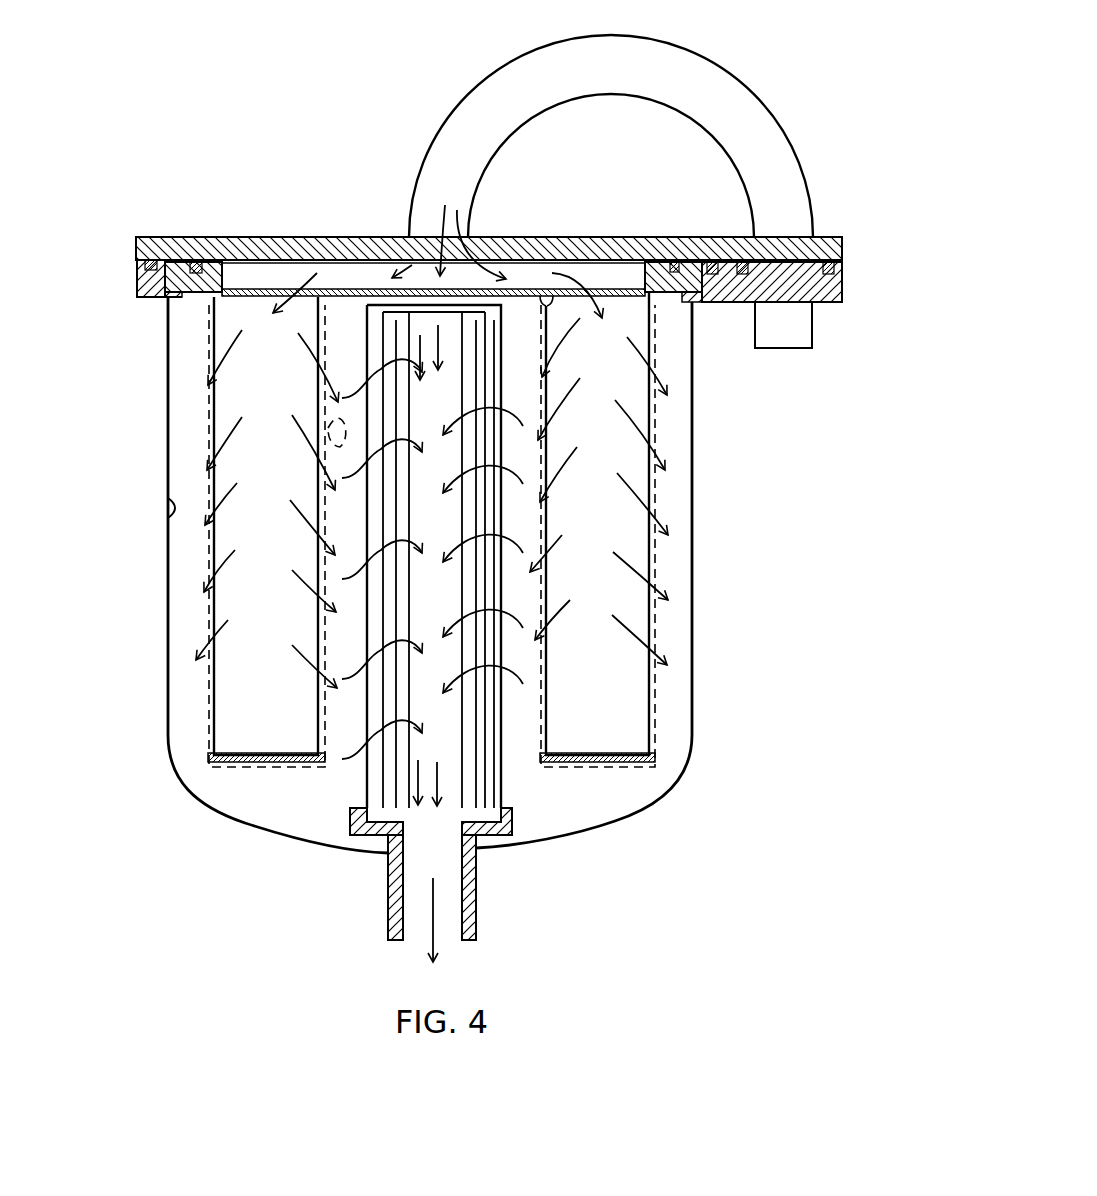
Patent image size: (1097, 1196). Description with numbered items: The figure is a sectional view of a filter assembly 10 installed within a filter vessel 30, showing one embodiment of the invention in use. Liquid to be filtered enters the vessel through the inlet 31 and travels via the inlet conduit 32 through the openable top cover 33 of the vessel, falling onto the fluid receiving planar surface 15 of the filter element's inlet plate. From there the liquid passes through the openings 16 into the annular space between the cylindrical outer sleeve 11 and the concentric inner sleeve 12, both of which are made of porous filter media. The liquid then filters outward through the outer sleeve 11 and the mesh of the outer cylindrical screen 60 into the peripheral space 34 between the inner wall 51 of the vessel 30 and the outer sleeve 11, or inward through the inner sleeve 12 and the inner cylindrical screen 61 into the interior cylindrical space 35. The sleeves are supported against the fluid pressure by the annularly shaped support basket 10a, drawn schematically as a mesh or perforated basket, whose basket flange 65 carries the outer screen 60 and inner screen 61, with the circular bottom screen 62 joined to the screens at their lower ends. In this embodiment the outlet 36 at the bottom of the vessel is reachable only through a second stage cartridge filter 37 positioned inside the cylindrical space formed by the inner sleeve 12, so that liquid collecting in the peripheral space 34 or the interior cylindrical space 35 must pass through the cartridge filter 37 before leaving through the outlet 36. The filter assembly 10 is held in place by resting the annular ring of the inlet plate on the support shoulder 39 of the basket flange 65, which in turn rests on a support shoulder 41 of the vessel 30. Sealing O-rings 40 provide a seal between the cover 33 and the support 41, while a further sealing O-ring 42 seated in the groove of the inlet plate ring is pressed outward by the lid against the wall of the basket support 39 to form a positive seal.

The filter assembly 10 is at (591, 778).
The support basket 10a is at (208, 570).
The outer sleeve 11 is at (218, 690).
The inner sleeve 12 is at (316, 722).
The fluid receiving planar surface 15 is at (352, 289).
The openings 16 is at (290, 290).
The filter vessel 30 is at (160, 440).
The inlet 31 is at (793, 350).
The inlet conduit 32 is at (748, 108).
The top cover 33 is at (270, 248).
The peripheral space 34 is at (204, 630).
The interior cylindrical space 35 is at (366, 644).
The outlet 36 is at (395, 888).
The second stage cartridge filter 37 is at (370, 765).
The support shoulder 39 is at (197, 300).
The sealing O-rings 40 is at (151, 260).
The support shoulder 41 is at (140, 272).
The sealing O-ring 42 is at (197, 264).
The inner wall 51 is at (175, 510).
The outer cylindrical screen 60 is at (208, 448).
The inner cylindrical screen 61 is at (322, 414).
The bottom screen 62 is at (247, 767).
The basket flange 65 is at (140, 299).